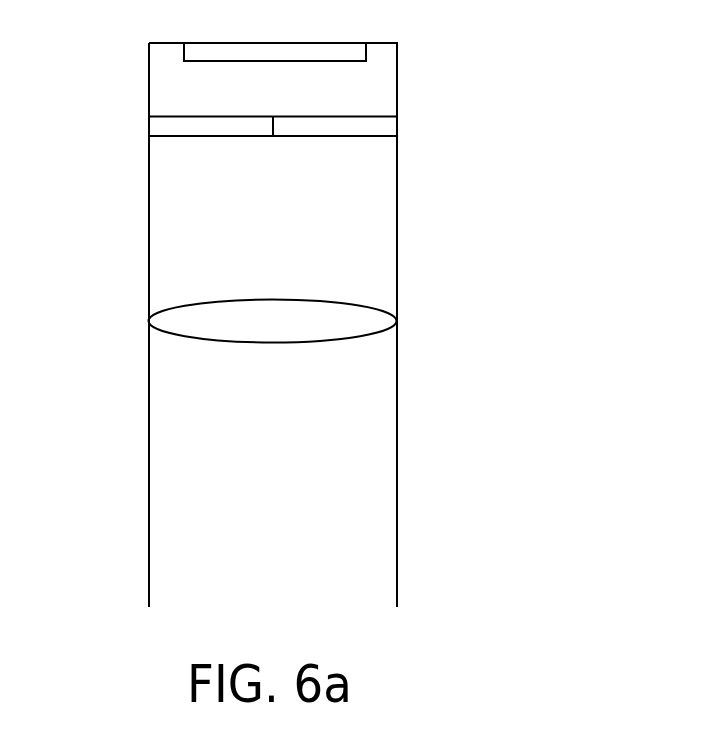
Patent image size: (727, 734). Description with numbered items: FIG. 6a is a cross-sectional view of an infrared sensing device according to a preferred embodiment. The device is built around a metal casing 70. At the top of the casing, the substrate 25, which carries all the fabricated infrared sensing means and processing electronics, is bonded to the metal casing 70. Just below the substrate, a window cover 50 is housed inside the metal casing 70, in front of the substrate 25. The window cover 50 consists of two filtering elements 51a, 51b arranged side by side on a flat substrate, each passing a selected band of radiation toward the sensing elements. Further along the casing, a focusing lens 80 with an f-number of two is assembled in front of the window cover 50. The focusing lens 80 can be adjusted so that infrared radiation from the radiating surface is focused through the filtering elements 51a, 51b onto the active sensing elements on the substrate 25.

The metal casing 70 is at (149, 70).
The substrate 25 is at (337, 50).
The filtering element 51b is at (157, 126).
The filtering element 51a is at (392, 128).
The window cover 50 is at (283, 143).
The focusing lens 80 is at (183, 320).